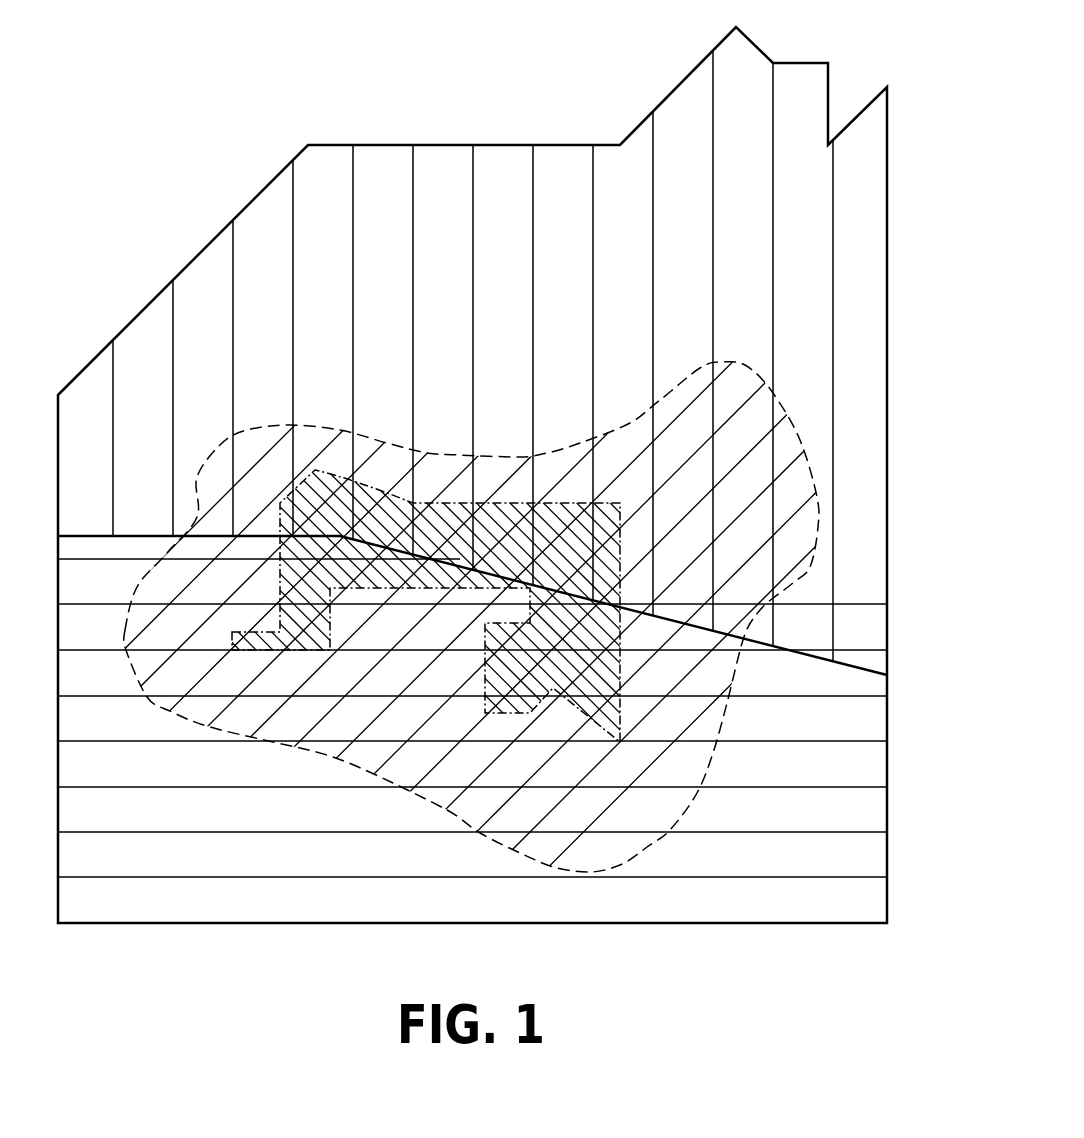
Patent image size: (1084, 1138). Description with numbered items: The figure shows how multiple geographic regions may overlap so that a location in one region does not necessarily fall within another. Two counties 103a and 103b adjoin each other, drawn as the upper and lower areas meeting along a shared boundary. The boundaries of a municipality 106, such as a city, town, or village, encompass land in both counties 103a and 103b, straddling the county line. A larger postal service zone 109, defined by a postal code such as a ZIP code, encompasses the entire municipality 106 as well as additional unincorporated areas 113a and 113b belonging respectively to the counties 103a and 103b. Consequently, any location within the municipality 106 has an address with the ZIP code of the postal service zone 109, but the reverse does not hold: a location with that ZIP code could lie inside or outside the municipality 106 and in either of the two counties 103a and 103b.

The county 103a is at (235, 220).
The county 103b is at (713, 924).
The municipality 106 is at (470, 665).
The postal service zone 109 is at (184, 474).
The unincorporated area 113a is at (762, 544).
The unincorporated area 113b is at (690, 716).